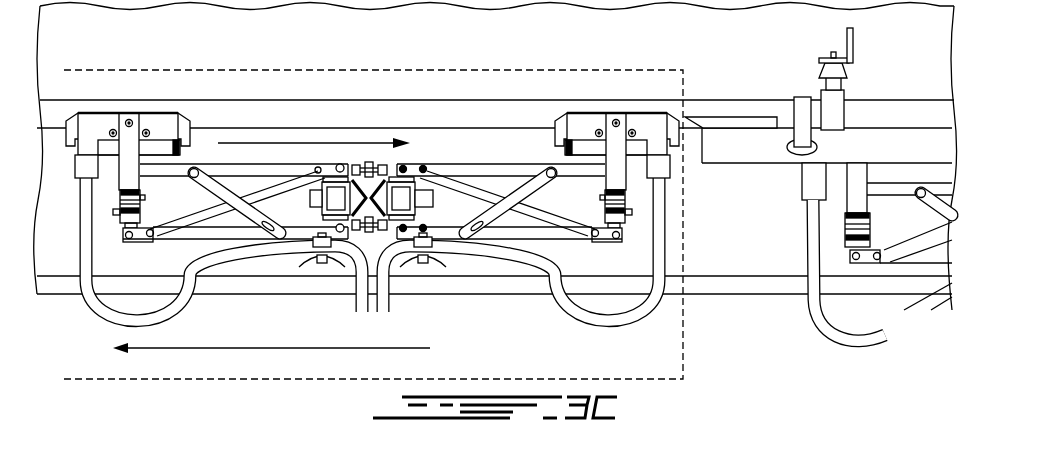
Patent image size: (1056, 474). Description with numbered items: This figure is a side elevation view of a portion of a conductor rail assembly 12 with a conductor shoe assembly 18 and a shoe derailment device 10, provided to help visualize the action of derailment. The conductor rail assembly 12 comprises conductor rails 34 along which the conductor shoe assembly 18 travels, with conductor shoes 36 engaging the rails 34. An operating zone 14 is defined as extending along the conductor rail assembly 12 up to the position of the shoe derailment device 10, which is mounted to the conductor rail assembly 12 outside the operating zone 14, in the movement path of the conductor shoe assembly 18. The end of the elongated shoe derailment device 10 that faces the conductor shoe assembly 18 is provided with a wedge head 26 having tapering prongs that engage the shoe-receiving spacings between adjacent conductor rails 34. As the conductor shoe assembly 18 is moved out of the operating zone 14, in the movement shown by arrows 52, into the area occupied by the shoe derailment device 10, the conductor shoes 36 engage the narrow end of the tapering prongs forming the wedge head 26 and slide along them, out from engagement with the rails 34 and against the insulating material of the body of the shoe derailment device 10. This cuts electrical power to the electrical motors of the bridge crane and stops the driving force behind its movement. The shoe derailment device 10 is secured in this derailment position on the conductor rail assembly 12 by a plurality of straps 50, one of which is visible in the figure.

The shoe derailment device 10 is at (909, 95).
The conductor rail assembly 12 is at (91, 94).
The operating zone 14 is at (373, 224).
The conductor shoe assembly 18 is at (587, 100).
The wedge head 26 is at (733, 117).
The conductor rails 34 is at (272, 100).
The conductor shoes 36 is at (163, 110).
The straps 50 is at (797, 97).
The arrows 52 is at (307, 143).